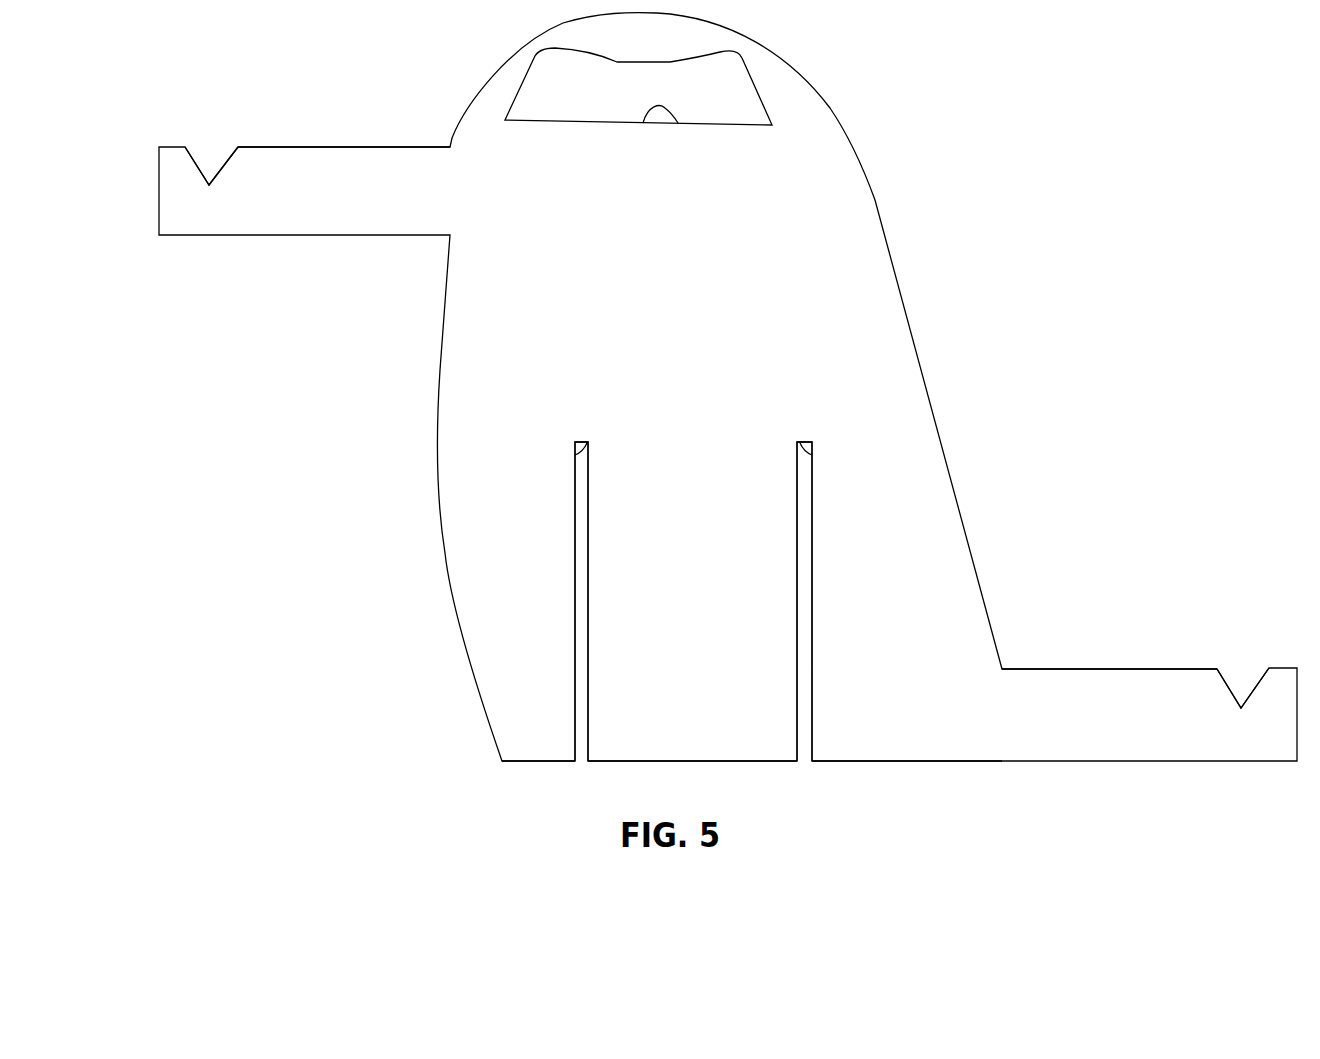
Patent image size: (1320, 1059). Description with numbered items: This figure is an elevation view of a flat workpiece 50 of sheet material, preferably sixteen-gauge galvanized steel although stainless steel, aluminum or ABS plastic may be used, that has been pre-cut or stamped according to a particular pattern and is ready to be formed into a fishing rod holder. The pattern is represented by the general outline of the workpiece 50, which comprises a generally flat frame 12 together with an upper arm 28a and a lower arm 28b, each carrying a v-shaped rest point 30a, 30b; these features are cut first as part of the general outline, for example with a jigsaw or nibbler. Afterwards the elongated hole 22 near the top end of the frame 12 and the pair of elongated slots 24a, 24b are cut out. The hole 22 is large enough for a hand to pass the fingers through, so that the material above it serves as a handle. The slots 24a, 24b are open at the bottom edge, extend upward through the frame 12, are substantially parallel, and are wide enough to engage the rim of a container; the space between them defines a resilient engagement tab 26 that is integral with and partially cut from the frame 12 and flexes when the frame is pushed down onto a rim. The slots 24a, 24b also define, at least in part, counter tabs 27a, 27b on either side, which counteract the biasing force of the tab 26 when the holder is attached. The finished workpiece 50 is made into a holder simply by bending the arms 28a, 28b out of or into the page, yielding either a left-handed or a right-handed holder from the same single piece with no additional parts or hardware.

The workpiece 50 is at (728, 387).
The frame 12 is at (870, 170).
The elongated hole 22 is at (652, 118).
The elongated slot 24a is at (585, 435).
The elongated slot 24b is at (803, 440).
The engagement tab 26 is at (701, 537).
The counter tab 27a is at (534, 576).
The counter tab 27b is at (907, 569).
The upper arm 28a is at (365, 170).
The lower arm 28b is at (1118, 692).
The v-shaped rest point 30a is at (225, 163).
The v-shaped rest point 30b is at (1260, 680).